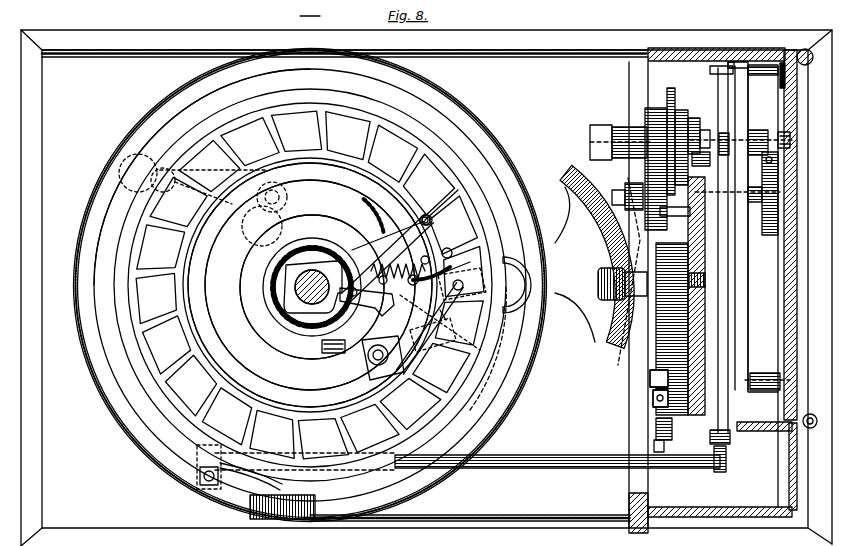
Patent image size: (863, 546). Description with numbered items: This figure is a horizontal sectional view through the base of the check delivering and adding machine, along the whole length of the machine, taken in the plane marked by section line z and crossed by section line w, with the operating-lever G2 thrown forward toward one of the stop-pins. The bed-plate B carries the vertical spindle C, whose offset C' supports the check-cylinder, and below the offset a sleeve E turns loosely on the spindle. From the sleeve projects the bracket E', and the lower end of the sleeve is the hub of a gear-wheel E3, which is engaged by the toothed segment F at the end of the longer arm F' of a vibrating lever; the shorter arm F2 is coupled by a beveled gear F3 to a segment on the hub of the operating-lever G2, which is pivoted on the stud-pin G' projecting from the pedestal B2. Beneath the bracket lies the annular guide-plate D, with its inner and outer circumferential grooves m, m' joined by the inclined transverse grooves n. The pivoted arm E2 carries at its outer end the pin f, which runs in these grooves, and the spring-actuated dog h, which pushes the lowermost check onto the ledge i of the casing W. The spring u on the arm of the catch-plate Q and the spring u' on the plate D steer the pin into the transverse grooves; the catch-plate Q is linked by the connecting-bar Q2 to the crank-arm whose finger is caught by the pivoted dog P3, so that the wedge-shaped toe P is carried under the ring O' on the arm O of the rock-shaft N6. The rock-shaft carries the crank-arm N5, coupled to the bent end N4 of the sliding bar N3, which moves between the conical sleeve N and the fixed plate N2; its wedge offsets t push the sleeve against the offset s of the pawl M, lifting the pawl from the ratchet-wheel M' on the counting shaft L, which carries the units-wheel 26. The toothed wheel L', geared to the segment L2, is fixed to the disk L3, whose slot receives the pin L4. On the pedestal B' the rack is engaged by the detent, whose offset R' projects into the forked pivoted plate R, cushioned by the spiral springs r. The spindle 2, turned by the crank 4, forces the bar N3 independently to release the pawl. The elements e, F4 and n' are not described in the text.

The section line z z is at (310, 9).
The casing W is at (345, 285).
The annular guide-plate D is at (130, 318).
The transverse grooves n is at (291, 293).
The section line w w is at (333, 136).
The circumferential flange or ledge i is at (500, 252).
The outer circumferential groove m' is at (329, 255).
The inner circumferential groove m is at (313, 285).
The spindle C is at (273, 275).
The offset C' is at (281, 287).
The sleeve E is at (306, 287).
The annular plate or ring O' is at (310, 285).
The arm O is at (310, 285).
The gear-wheel E3 is at (356, 249).
The spring u is at (441, 221).
The pivoted arm E2 is at (388, 265).
The toothed segment F is at (360, 217).
The connecting-bar Q2 is at (400, 260).
The spiral springs r is at (429, 269).
The catch-plate Q is at (462, 267).
The spring-actuated dog h is at (440, 322).
The pin f is at (440, 323).
The stud e is at (454, 293).
The bracket E' is at (376, 302).
The pivot bearing F4 is at (383, 352).
The pivoted dog or catch P3 is at (325, 350).
The longer arm F' is at (495, 347).
The spring u' is at (241, 463).
The wedge-shaped toe P is at (305, 498).
The beveled gear F3 is at (597, 256).
The shorter arm F2 is at (591, 271).
The stud-pin G' is at (611, 284).
The toothed segment L2 is at (626, 194).
The toothed wheel L' is at (628, 165).
The plain lateral disk L3 is at (674, 108).
The pin L4 is at (675, 217).
The ratchet-wheel M' is at (697, 143).
The clutch part n' is at (701, 136).
The wedge-shaped offsets t is at (742, 133).
The offset s is at (703, 162).
The pawl M is at (702, 296).
The standard or pedestal B2 is at (702, 300).
The pedestal or standard B' is at (672, 329).
The conical sleeve N is at (699, 249).
The bed-plate B is at (677, 290).
The offset R' is at (633, 374).
The operating-lever G2 is at (650, 393).
The pivoted plate R is at (668, 435).
The horizontal rock-shaft N6 is at (580, 455).
The bent-up end N4 is at (728, 439).
The vertical crank-arm N5 is at (725, 463).
The sliding bar N3 is at (733, 226).
The fixed plate N2 is at (742, 286).
The shaft L is at (769, 128).
The units-wheel 26 is at (765, 160).
The crank 4 is at (778, 78).
The spindle 2 is at (730, 66).